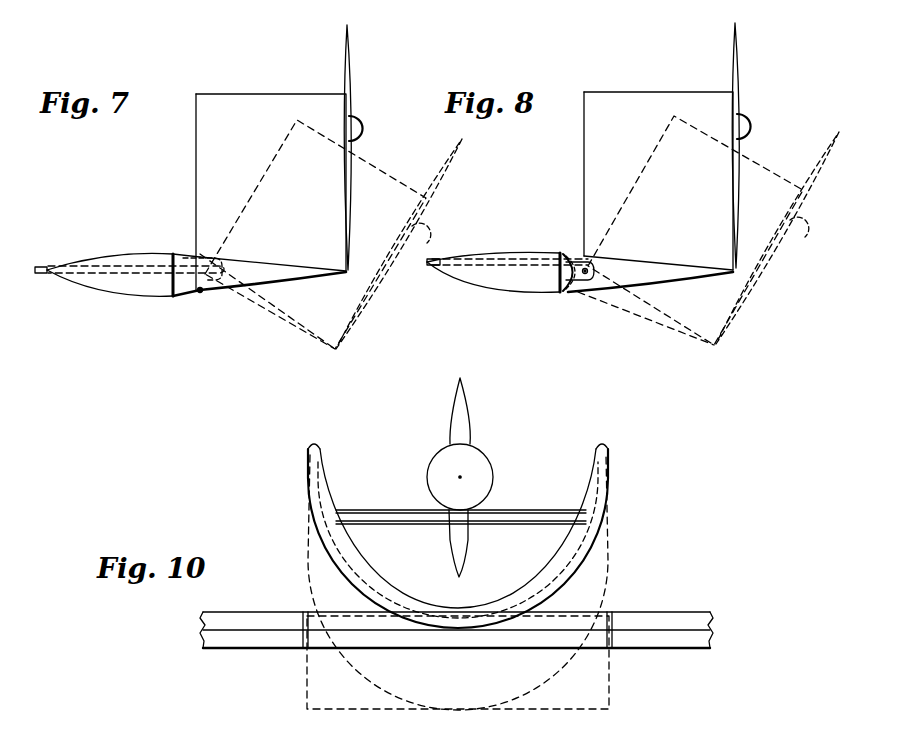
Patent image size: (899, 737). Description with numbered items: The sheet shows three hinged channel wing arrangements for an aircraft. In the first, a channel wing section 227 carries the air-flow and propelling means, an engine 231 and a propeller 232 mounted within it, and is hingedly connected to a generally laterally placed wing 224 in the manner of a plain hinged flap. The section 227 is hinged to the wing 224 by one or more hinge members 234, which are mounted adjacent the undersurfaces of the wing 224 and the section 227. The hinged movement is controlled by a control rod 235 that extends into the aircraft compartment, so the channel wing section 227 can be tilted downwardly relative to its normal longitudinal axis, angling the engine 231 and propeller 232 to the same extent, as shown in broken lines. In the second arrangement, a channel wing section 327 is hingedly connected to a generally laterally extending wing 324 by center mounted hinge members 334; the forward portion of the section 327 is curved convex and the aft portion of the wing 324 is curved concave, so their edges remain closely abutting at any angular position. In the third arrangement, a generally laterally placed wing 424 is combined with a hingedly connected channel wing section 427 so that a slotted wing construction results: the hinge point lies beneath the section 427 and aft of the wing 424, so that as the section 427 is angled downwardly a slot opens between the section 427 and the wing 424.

In FIG. 7, the channel wing section 227 is at (230, 101).
In FIG. 7, the propeller 232 is at (343, 47).
In FIG. 7, the engine 231 is at (366, 128).
In FIG. 7, the generally laterally placed wing 224 is at (121, 263).
In FIG. 7, the control rod 235 is at (46, 274).
In FIG. 7, the hinge member 234 is at (188, 291).
In FIG. 8, the channel wing section 327 is at (636, 101).
In FIG. 8, the generally laterally extending wing 324 is at (496, 270).
In FIG. 8, the center mounted hinge member 334 is at (560, 258).
In FIG. 10, the channel wing section 427 is at (318, 457).
In FIG. 10, the generally laterally placed wing 424 is at (265, 635).